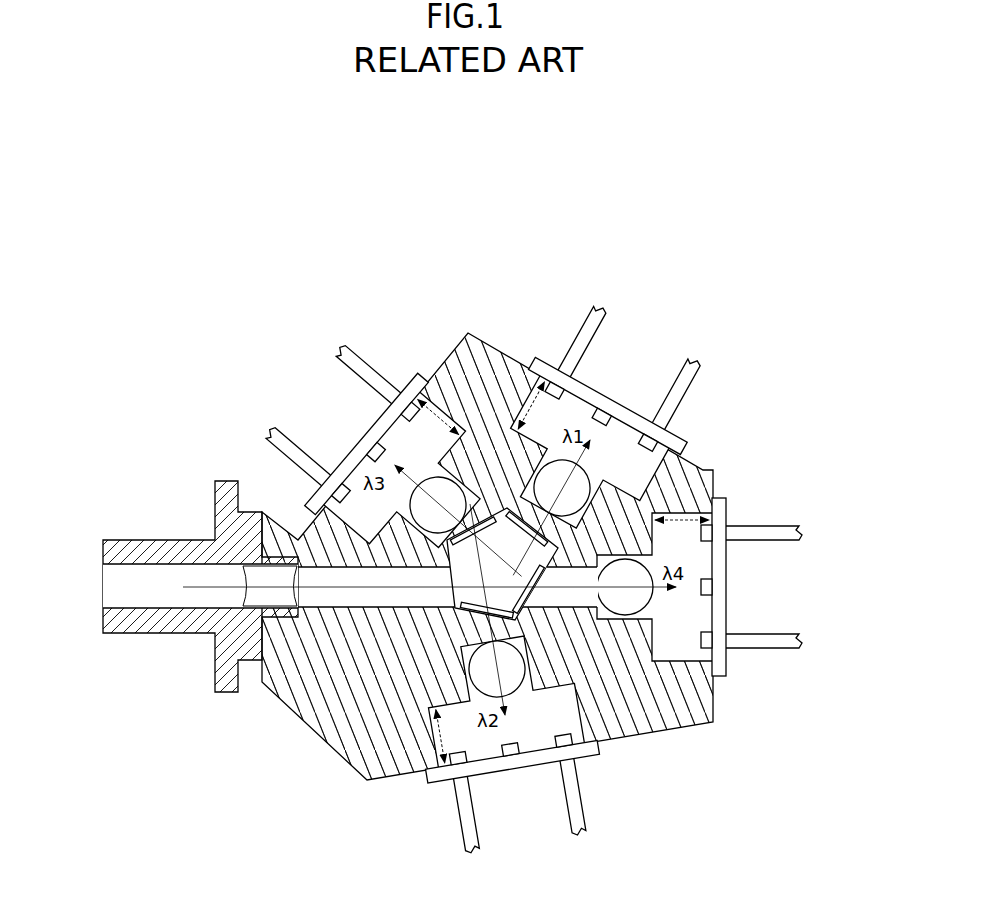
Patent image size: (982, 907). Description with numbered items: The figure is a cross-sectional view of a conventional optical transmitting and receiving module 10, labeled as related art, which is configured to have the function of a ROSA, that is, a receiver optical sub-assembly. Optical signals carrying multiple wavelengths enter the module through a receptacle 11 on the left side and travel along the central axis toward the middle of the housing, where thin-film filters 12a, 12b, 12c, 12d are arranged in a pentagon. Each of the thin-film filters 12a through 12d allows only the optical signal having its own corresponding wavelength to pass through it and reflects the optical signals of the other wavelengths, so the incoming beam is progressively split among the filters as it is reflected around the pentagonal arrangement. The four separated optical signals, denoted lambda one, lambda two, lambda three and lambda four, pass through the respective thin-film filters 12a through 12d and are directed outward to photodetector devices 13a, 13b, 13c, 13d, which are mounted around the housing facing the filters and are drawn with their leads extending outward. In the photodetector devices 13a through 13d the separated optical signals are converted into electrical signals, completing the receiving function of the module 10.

The optical transmitting and receiving module 10 is at (235, 326).
The receptacle 11 is at (228, 612).
The thin-film filter 12a is at (517, 513).
The thin-film filter 12b is at (505, 642).
The thin-film filter 12c is at (483, 522).
The thin-film filter 12d is at (535, 606).
The photodetector device 13a is at (608, 388).
The photodetector device 13b is at (433, 794).
The photodetector device 13c is at (355, 432).
The photodetector device 13d is at (732, 587).